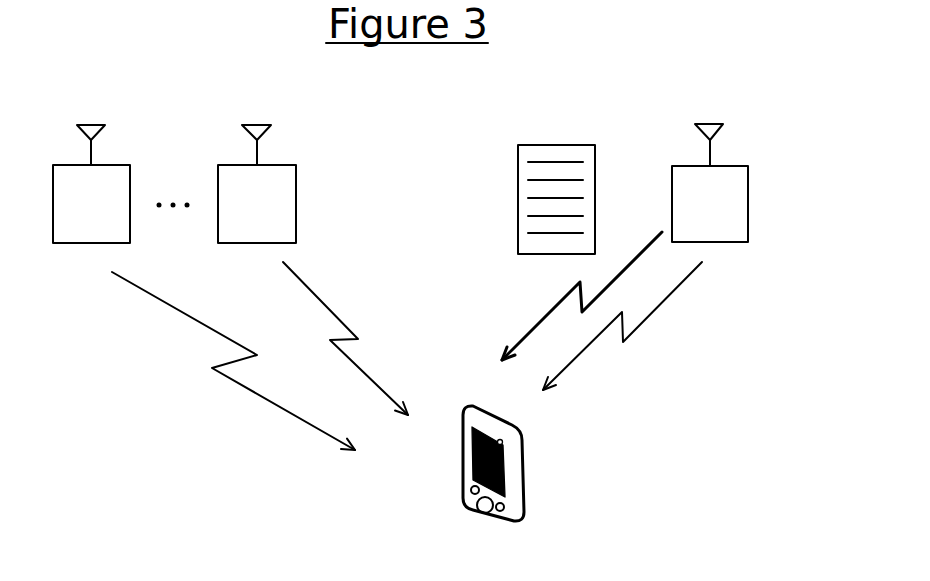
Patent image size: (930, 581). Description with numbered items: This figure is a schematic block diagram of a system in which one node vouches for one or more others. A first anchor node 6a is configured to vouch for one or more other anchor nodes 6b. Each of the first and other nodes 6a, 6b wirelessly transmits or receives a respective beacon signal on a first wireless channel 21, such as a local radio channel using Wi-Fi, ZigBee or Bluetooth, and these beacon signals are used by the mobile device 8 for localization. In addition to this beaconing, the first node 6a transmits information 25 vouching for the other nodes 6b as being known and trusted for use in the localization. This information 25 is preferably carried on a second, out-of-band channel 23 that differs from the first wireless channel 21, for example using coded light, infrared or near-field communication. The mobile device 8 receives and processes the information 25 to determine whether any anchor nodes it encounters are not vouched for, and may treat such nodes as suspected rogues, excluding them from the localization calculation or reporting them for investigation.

The first anchor node 6a is at (748, 197).
The other anchor node 6b is at (296, 197).
The mobile device 8 is at (525, 480).
The first wireless channel 21 is at (272, 402).
The second channel 23 is at (533, 325).
The information vouching for other nodes 25 is at (583, 145).